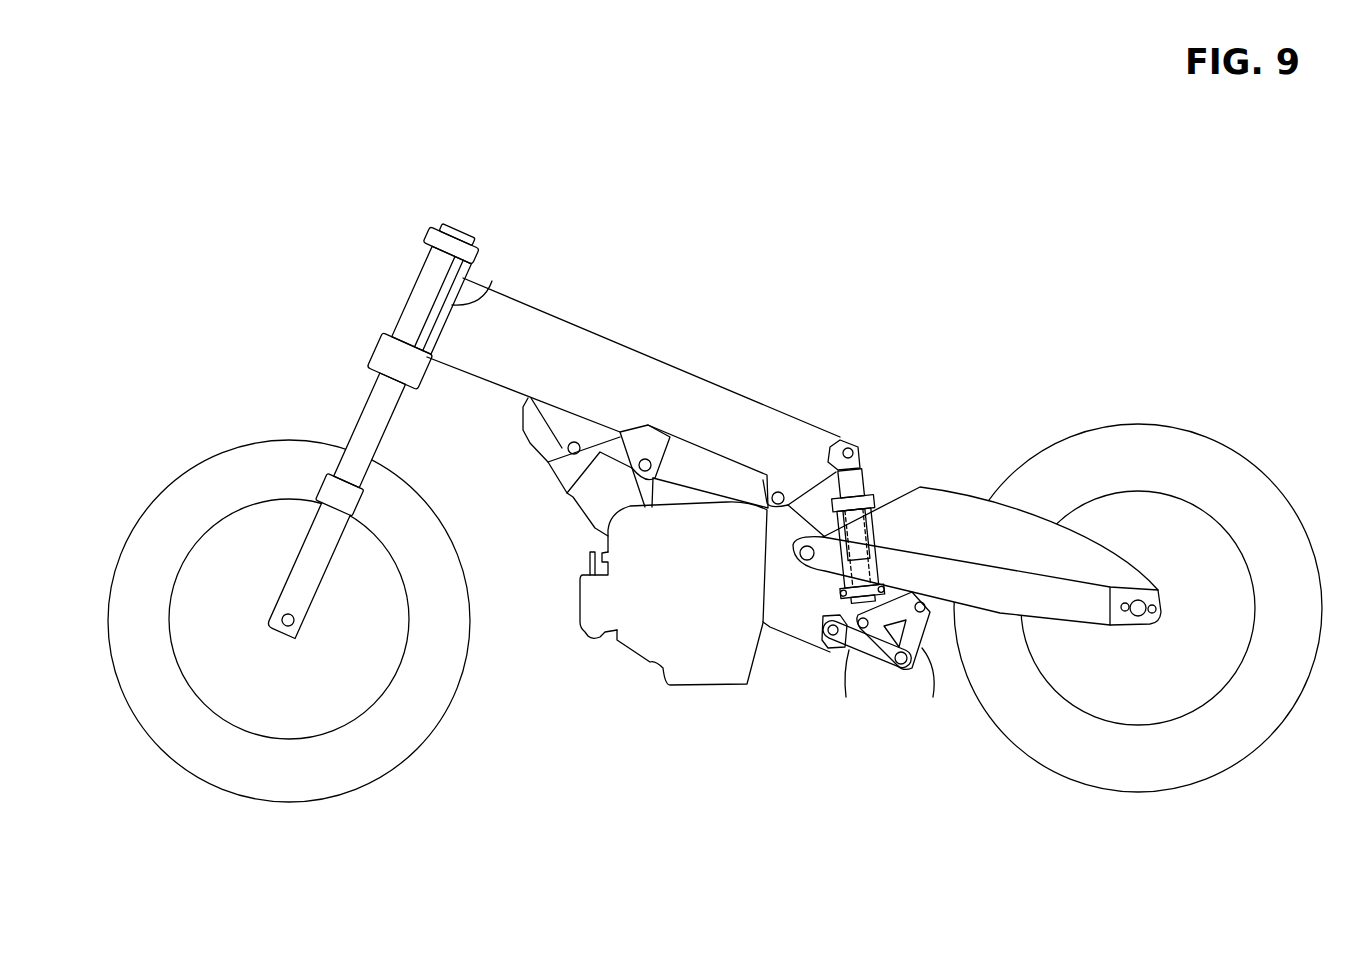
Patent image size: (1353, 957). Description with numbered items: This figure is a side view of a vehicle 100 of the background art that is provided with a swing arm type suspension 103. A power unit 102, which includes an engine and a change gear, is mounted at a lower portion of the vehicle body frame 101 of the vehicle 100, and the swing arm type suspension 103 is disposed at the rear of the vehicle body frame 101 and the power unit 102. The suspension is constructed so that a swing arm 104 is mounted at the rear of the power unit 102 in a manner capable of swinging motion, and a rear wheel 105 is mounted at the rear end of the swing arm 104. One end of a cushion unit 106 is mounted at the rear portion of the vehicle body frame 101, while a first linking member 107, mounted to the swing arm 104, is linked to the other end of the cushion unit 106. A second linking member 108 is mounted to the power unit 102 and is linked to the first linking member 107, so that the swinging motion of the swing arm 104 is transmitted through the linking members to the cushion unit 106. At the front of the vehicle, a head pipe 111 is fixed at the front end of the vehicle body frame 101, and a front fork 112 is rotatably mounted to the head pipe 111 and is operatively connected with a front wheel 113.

The vehicle 100 is at (282, 236).
The vehicle body frame 101 is at (587, 327).
The power unit 102 is at (690, 688).
The swing arm type suspension 103 is at (963, 483).
The swing arm 104 is at (1042, 512).
The rear wheel 105 is at (1246, 457).
The cushion unit 106 is at (870, 487).
The first linking member 107 is at (931, 642).
The second linking member 108 is at (858, 660).
The head pipe 111 is at (492, 281).
The front fork 112 is at (360, 408).
The front wheel 113 is at (178, 478).